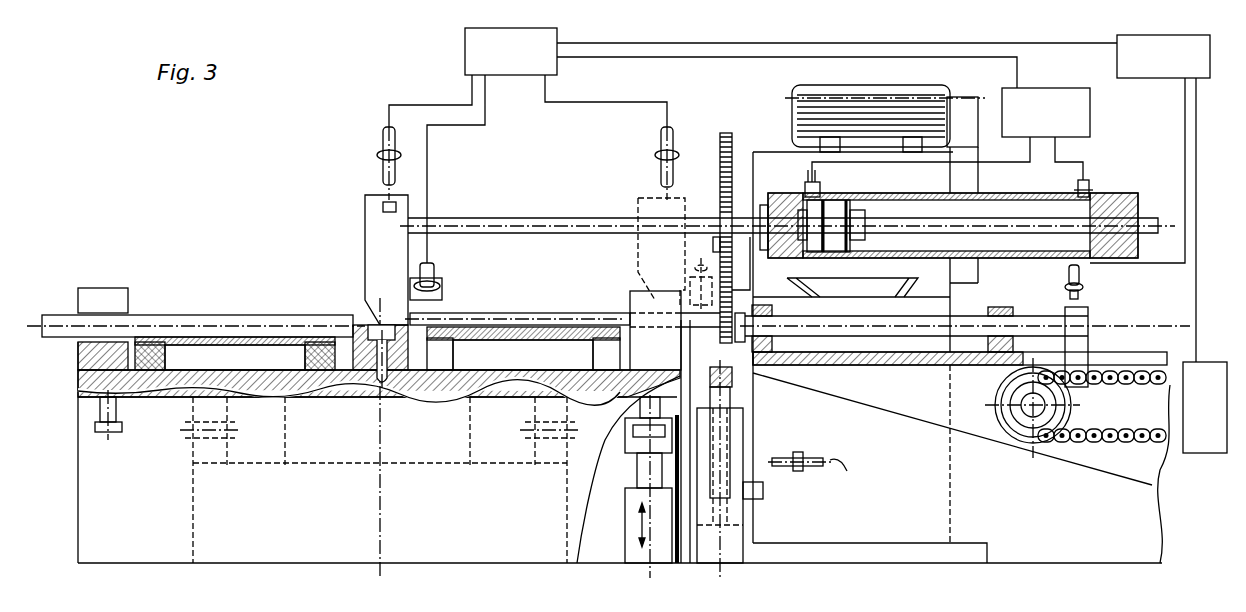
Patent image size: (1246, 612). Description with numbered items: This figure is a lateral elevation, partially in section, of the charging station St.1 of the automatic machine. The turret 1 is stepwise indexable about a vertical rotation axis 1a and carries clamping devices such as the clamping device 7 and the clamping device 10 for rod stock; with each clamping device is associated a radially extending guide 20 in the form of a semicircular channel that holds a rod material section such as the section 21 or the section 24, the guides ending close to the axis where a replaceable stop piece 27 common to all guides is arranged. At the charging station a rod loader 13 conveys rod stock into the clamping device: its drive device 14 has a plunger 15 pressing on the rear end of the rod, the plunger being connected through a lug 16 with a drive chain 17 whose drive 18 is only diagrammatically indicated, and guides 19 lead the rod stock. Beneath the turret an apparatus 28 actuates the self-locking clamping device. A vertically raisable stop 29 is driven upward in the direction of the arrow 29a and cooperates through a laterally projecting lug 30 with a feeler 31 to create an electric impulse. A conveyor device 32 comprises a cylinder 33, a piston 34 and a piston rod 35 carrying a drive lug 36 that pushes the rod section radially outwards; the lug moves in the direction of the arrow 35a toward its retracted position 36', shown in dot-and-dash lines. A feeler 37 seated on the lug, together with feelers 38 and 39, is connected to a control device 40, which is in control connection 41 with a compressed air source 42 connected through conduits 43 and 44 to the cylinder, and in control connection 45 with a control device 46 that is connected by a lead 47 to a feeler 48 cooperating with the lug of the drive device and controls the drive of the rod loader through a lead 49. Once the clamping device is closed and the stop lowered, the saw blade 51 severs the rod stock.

The turret 1 is at (503, 388).
The vertical rotation axis 1a is at (380, 494).
The clamping device 7 is at (630, 298).
The clamping device 10 is at (97, 295).
The rod loader 13 is at (1040, 455).
The drive device 14 is at (905, 366).
The plunger 15 is at (827, 338).
The lug 16 is at (1088, 322).
The drive chain 17 is at (1130, 447).
The drive 18 is at (1196, 453).
The guides 19 is at (769, 305).
The guide 20 is at (222, 343).
The rod material section 21 is at (520, 316).
The rod material section 24 is at (205, 316).
The stop piece 27 is at (362, 322).
The apparatus for actuating the clamping device 28 is at (639, 556).
The stop 29 is at (732, 397).
The arrow 29a is at (700, 398).
The lug 30 is at (760, 497).
The feeler 31 is at (807, 469).
The conveyor device 32 is at (990, 258).
The cylinder 33 is at (1010, 199).
The piston 34 is at (835, 212).
The piston rod 35 is at (575, 221).
The arrow 35a is at (548, 197).
The drive lug 36 is at (365, 260).
The retracted position of the lug 36' is at (642, 251).
The feeler 37 is at (436, 268).
The feeler 38 is at (383, 143).
The feeler 39 is at (661, 143).
The control device 40 is at (465, 45).
The control connection 41 is at (752, 57).
The compressed air source 42 is at (1010, 100).
The conduit 43 is at (876, 160).
The conduit 44 is at (1087, 172).
The control connection 45 is at (765, 33).
The control device 46 is at (1152, 70).
The lead 47 is at (1183, 162).
The feeler 48 is at (1081, 285).
The lead 49 is at (1193, 152).
The saw blade 51 is at (732, 225).
The workpiece position W' is at (699, 374).
The charging station St.1 is at (928, 528).